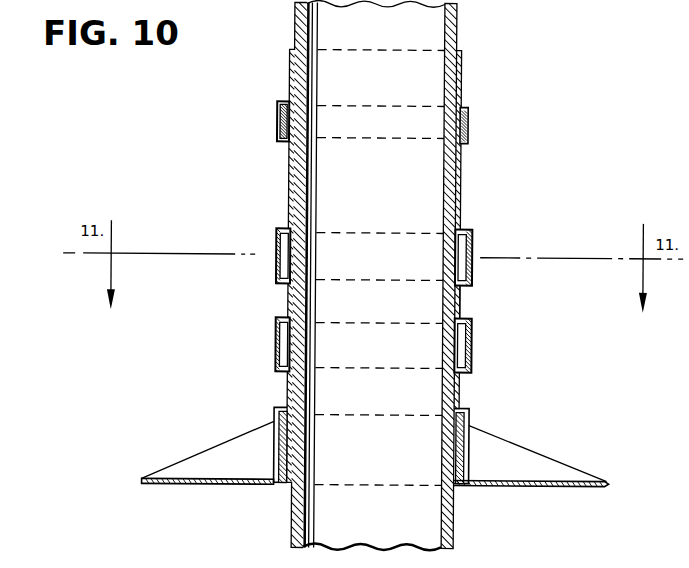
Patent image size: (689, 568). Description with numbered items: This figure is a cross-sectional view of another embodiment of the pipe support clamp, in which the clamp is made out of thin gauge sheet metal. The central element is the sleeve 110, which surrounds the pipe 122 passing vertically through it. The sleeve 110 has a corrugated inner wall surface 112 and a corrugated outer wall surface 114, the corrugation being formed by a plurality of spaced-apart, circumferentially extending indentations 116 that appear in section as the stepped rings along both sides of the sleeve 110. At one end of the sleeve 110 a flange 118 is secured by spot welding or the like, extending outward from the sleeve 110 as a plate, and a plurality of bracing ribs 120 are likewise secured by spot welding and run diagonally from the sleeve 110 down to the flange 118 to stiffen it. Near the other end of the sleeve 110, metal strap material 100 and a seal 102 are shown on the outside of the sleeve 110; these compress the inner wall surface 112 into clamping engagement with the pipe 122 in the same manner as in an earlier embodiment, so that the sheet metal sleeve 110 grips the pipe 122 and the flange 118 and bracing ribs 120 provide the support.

The metal strap material 100 is at (465, 113).
The seal 102 is at (278, 123).
The sleeve 110 is at (460, 190).
The inner wall surface 112 is at (445, 312).
The outer wall surface 114 is at (473, 251).
The indentations 116 is at (460, 300).
The flange 118 is at (575, 480).
The bracing ribs 120 is at (230, 455).
The pipe 122 is at (298, 515).